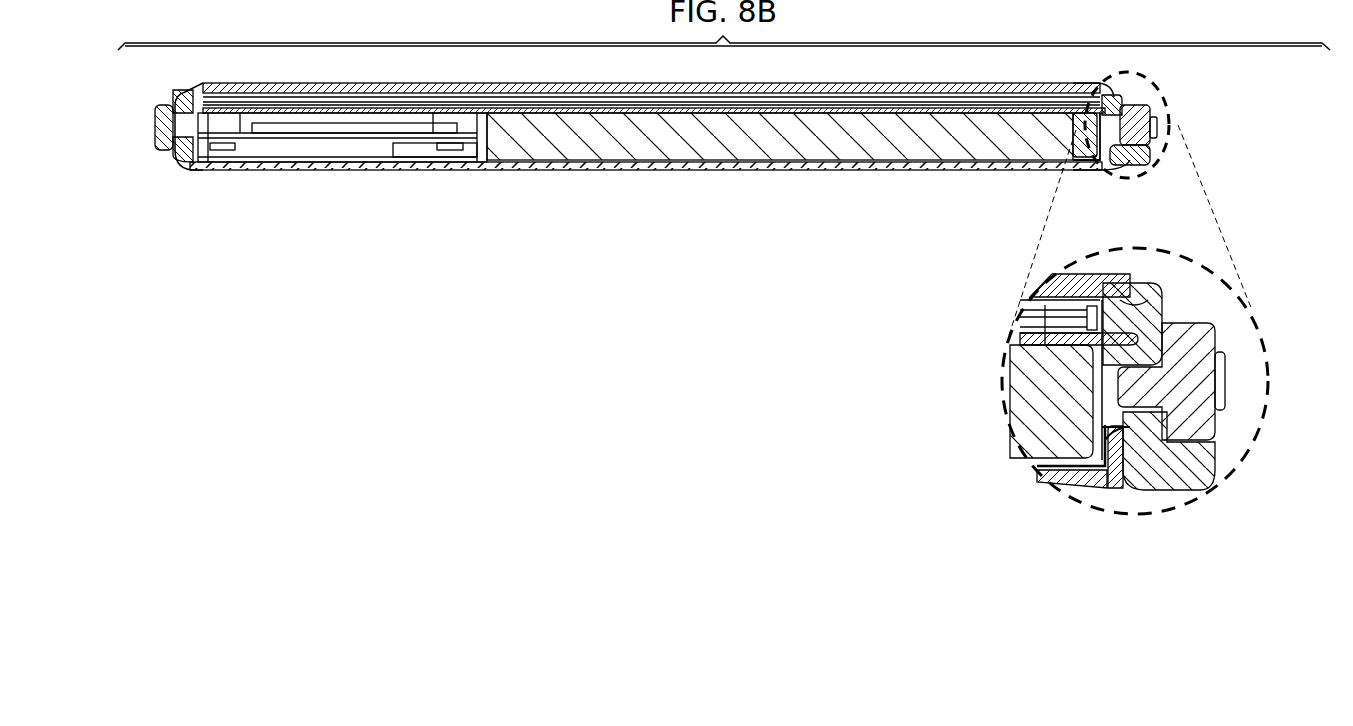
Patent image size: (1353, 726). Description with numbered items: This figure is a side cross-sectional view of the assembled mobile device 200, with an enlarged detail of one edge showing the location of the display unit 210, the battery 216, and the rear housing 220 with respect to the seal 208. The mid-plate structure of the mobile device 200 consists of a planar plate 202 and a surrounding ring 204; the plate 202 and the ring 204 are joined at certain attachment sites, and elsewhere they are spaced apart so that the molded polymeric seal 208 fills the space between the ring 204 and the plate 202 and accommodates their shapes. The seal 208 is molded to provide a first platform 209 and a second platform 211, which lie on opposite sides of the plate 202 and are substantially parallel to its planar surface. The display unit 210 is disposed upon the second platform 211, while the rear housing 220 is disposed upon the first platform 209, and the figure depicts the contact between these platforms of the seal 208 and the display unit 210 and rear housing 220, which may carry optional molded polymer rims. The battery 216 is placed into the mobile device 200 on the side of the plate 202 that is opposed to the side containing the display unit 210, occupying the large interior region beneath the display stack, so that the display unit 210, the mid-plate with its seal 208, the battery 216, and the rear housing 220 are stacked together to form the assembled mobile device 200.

The mobile device 200 is at (521, 204).
The plate 202 is at (1022, 335).
The ring 204 is at (1213, 420).
The seal 208 is at (1190, 450).
The first platform 209 is at (1152, 306).
The display unit 210 is at (1112, 272).
The second platform 211 is at (1128, 485).
The battery 216 is at (1016, 430).
The rear housing 220 is at (1095, 480).